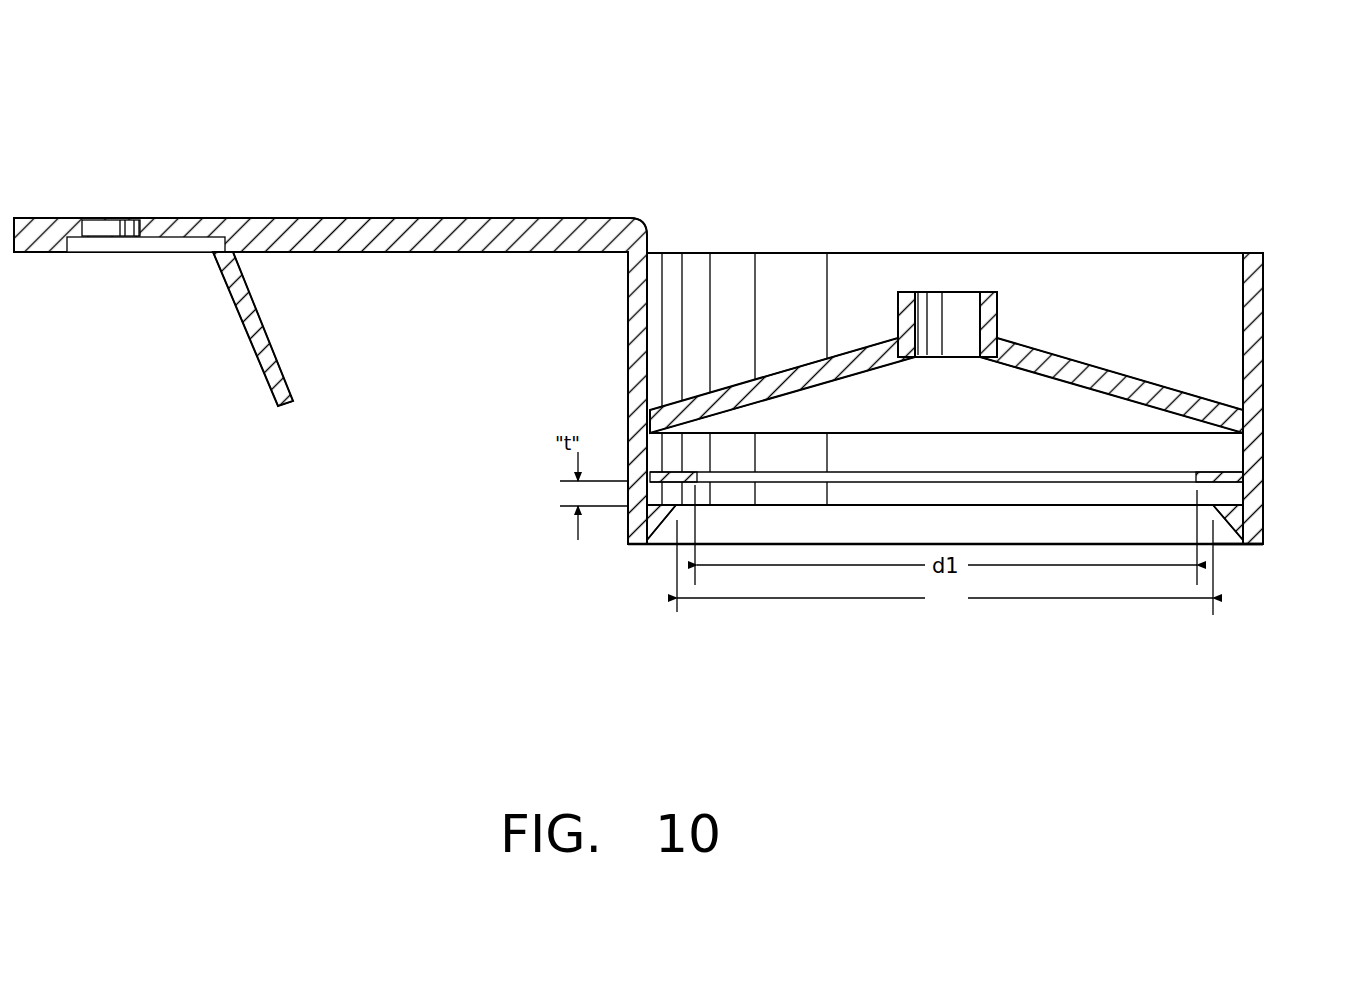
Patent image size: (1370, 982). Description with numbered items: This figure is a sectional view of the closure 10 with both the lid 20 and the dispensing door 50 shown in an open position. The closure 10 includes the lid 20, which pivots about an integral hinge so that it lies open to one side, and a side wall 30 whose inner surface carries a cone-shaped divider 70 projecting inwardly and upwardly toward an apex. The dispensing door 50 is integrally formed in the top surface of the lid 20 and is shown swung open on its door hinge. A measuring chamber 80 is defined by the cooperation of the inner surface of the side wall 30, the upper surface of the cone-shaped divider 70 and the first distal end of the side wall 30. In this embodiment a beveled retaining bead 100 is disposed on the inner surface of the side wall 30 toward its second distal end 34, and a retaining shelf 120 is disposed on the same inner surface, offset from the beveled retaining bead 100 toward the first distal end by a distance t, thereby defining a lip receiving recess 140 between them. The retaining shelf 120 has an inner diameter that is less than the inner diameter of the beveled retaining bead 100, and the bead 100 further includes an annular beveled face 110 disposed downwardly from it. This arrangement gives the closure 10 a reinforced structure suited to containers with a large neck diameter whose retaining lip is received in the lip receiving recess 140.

The closure 10 is at (1073, 172).
The lid 20 is at (338, 228).
The side wall 30 is at (1265, 322).
The second distal end 34 is at (1260, 546).
The dispensing door 50 is at (255, 335).
The cone-shaped divider 70 is at (790, 380).
The measuring chamber 80 is at (1203, 288).
The beveled retaining bead 100 is at (1243, 517).
The annular beveled face 110 is at (1222, 546).
The retaining shelf 120 is at (1223, 472).
The lip receiving recess 140 is at (1242, 490).